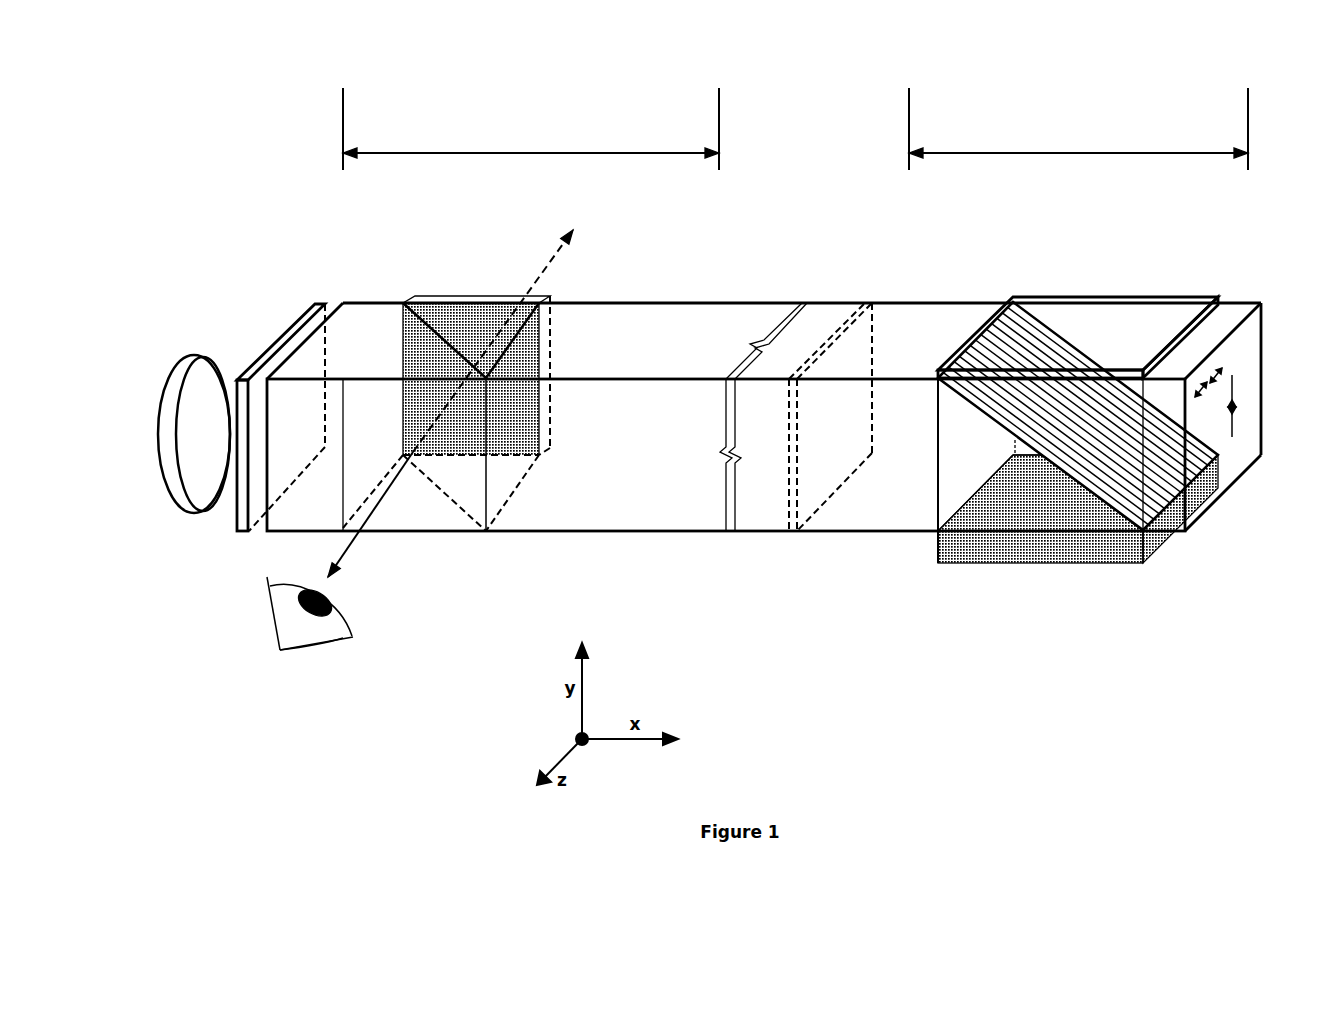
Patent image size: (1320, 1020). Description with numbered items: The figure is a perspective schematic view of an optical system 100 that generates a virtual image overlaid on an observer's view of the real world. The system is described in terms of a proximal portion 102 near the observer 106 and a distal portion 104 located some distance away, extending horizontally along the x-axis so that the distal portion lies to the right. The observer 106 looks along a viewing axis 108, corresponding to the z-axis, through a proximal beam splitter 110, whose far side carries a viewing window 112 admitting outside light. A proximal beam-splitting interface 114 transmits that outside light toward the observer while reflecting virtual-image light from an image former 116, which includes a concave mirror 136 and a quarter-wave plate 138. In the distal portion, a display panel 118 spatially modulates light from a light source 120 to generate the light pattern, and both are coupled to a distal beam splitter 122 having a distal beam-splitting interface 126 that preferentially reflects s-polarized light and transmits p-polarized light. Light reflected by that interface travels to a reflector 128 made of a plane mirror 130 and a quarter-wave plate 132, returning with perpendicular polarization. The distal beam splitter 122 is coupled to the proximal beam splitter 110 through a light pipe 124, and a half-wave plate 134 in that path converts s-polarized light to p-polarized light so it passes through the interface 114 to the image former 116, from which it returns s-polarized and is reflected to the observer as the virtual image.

The optical system 100 is at (818, 688).
The proximal portion 102 is at (531, 129).
The distal portion 104 is at (1078, 129).
The observer 106 is at (298, 650).
The viewing axis 108 is at (543, 270).
The proximal beam splitter 110 is at (488, 497).
The viewing window 112 is at (483, 297).
The proximal beam-splitting interface 114 is at (447, 300).
The image former 116 is at (229, 372).
The display panel 118 is at (1046, 563).
The light source 120 is at (1237, 430).
The distal beam splitter 122 is at (938, 468).
The light pipe 124 is at (735, 531).
The distal beam-splitting interface 126 is at (1100, 565).
The reflector 128 is at (1078, 291).
The plane mirror 130 is at (1100, 297).
The quarter-wave plate 132 is at (1072, 236).
The half-wave plate 134 is at (873, 335).
The concave mirror 136 is at (180, 363).
The quarter-wave plate 138 is at (281, 384).